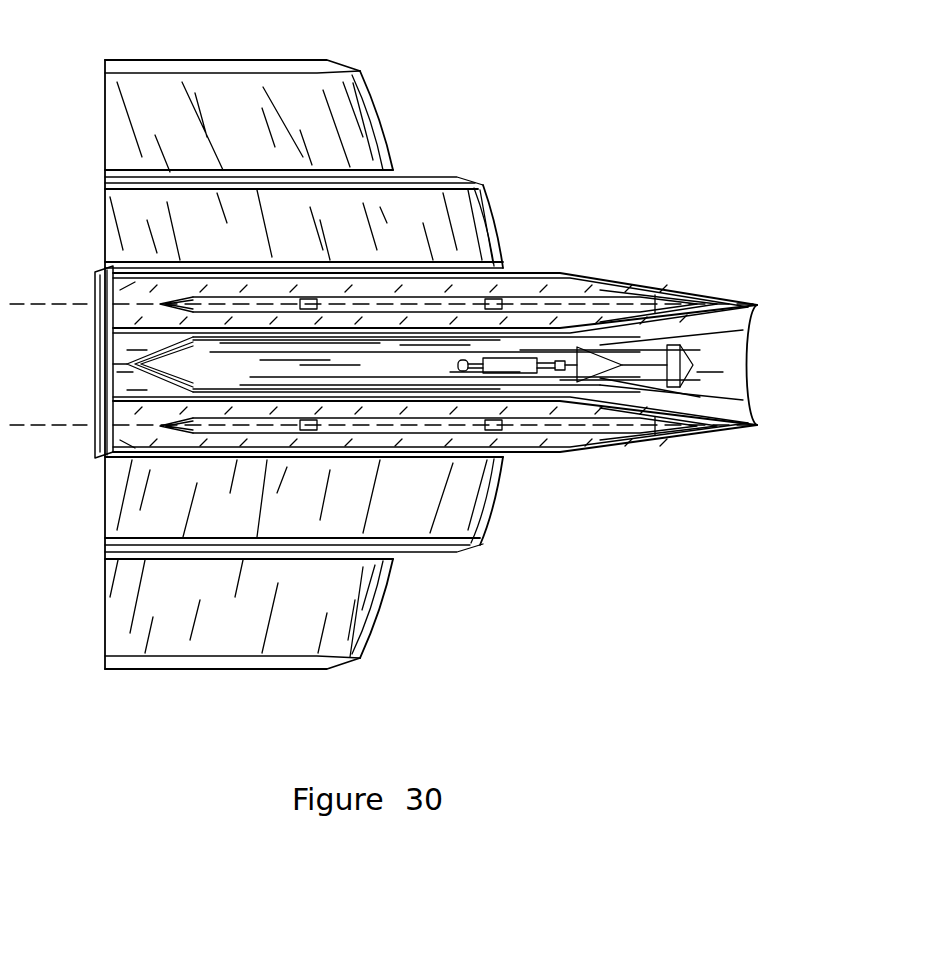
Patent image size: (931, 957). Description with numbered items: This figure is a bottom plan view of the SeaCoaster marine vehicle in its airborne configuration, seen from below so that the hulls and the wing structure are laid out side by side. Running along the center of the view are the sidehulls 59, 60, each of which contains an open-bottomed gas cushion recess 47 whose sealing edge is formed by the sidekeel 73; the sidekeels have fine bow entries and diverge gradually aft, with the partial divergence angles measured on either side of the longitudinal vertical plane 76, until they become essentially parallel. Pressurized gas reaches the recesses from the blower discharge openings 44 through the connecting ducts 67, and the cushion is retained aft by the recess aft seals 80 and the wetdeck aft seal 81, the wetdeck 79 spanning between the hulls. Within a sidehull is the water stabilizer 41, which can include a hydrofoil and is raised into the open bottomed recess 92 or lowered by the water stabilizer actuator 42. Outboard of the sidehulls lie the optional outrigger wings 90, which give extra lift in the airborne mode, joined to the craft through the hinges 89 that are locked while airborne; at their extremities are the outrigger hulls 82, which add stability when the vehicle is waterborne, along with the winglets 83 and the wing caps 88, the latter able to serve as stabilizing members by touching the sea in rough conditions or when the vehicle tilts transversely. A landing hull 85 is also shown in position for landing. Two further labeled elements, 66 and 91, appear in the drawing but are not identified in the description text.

The water stabilizer 41 is at (562, 368).
The water stabilizer actuator 42 is at (556, 372).
The blower discharge openings 44 is at (498, 298).
The gas cushion recesses 47 is at (407, 307).
The sidehull 59 is at (510, 368).
The starboard sidehull 60 is at (411, 363).
The tail arrow member 66 is at (693, 355).
The connecting ducts 67 is at (317, 298).
The sidekeel 73 is at (673, 340).
The longitudinal vertical plane 76 is at (763, 305).
The wetdeck 79 is at (363, 363).
The recess aft seals 80 is at (147, 297).
The wetdeck aft seal 81 is at (130, 352).
The outrigger hulls 82 is at (210, 168).
The winglets 83 is at (374, 381).
The landing hull 85 is at (700, 397).
The wing caps 88 is at (282, 75).
The hinges 89 is at (258, 267).
The outrigger wings 90 is at (288, 358).
The wing edge 91 is at (393, 157).
The open bottomed recess 92 is at (468, 296).